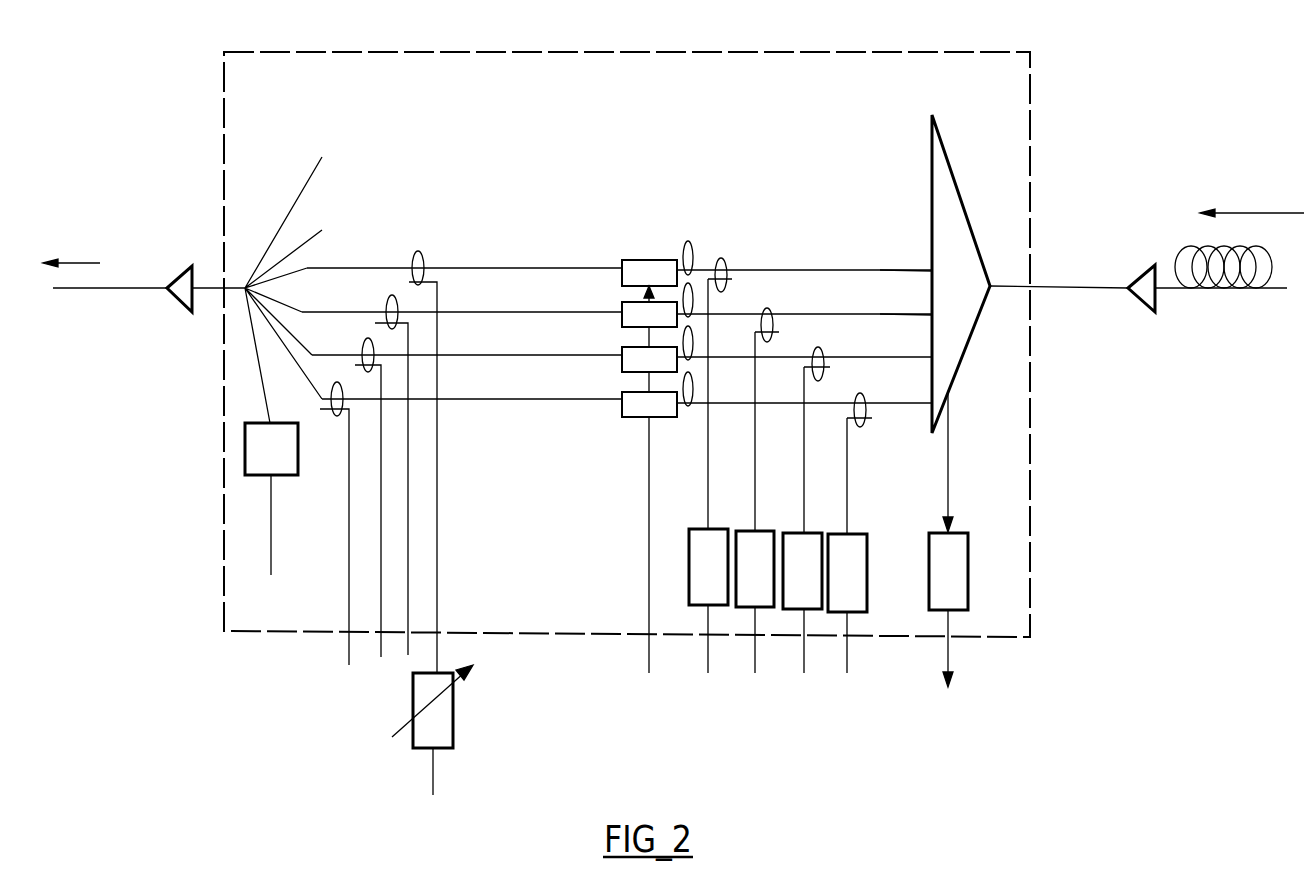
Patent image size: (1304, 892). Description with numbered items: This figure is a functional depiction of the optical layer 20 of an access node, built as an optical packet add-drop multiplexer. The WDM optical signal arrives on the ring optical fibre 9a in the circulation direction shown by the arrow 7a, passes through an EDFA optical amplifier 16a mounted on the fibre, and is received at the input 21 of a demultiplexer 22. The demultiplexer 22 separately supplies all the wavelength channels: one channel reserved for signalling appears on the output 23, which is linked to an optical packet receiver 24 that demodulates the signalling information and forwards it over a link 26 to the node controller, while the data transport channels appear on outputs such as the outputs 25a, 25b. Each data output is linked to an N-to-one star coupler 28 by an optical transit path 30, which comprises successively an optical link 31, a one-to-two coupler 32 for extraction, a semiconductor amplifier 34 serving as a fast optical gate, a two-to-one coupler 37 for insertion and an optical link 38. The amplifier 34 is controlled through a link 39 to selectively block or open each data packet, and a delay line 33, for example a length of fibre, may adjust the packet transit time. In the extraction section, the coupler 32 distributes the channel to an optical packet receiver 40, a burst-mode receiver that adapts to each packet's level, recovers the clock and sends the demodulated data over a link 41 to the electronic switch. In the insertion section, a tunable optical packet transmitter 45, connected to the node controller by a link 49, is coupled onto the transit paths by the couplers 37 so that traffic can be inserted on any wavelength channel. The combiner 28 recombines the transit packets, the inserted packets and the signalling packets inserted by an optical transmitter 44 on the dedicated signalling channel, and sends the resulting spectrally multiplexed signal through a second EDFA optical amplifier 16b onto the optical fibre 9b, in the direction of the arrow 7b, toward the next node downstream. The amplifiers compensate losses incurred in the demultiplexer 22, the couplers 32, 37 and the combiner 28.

The circulation direction arrow 7a is at (1255, 212).
The circulation direction arrow 7b is at (77, 262).
The optical fibre 9a is at (1277, 297).
The optical fibre 9b is at (85, 290).
The EDFA optical amplifier 16a is at (1150, 314).
The EDFA optical amplifier 16b is at (180, 266).
The optical layer 20 is at (1030, 568).
The input 21 is at (1033, 286).
The demultiplexer 22 is at (952, 175).
The output 23 is at (950, 393).
The optical packet receiver 24 is at (968, 565).
The output 25a is at (930, 268).
The output 25b is at (930, 313).
The link 26 is at (950, 660).
The star coupler 28 is at (273, 195).
The optical transit path 30 is at (790, 356).
The optical link 31 is at (840, 270).
The 1:2 coupler 32 is at (722, 258).
The delay line 33 is at (686, 232).
The semiconductor amplifier 34 is at (648, 260).
The coupler 37 is at (416, 252).
The optical link 38 is at (364, 268).
The link 39 is at (648, 590).
The optical packet receiver 40 is at (688, 568).
The link 41 is at (708, 655).
The optical transmitter 44 is at (245, 448).
The optical packet transmitter 45 is at (455, 703).
The link 49 is at (433, 777).